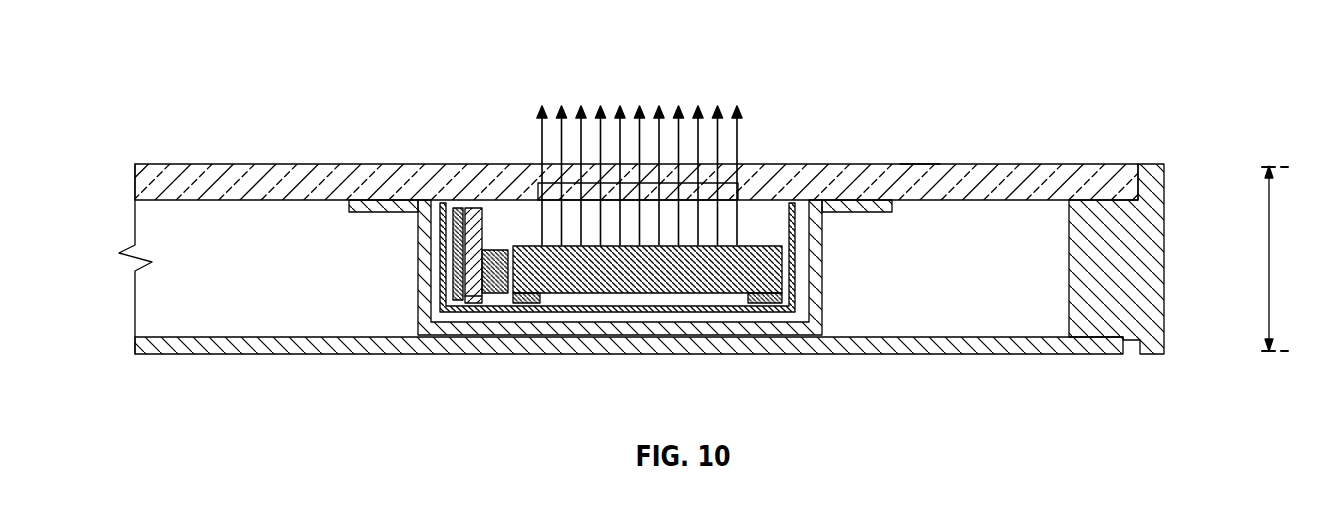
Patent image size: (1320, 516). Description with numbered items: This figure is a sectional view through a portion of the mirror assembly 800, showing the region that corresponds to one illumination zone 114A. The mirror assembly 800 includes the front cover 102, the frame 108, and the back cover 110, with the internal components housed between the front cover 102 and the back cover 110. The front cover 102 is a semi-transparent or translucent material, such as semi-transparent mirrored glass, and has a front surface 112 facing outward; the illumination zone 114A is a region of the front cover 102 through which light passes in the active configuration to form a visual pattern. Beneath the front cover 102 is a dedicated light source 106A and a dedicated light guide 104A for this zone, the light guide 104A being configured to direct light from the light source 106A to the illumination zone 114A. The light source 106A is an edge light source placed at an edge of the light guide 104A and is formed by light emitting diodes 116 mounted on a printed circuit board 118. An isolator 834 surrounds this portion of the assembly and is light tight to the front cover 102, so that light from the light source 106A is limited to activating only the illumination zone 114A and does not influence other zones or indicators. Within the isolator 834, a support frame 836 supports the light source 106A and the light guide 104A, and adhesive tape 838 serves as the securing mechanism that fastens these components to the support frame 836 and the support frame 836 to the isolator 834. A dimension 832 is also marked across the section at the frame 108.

The mirror assembly 800 is at (1024, 46).
The front cover 102 is at (1036, 167).
The front surface 112 is at (920, 160).
The illumination zone 114A is at (736, 184).
The adhesive tape 838 is at (458, 208).
The light source 106A is at (474, 208).
The light emitting diodes 116 is at (494, 250).
The printed circuit board 118 is at (470, 302).
The support frame 836 is at (795, 257).
The light guide 104A is at (770, 284).
The isolator 834 is at (821, 326).
The frame 108 is at (1157, 270).
The device thickness 832 is at (1268, 285).
The back cover 110 is at (1112, 355).